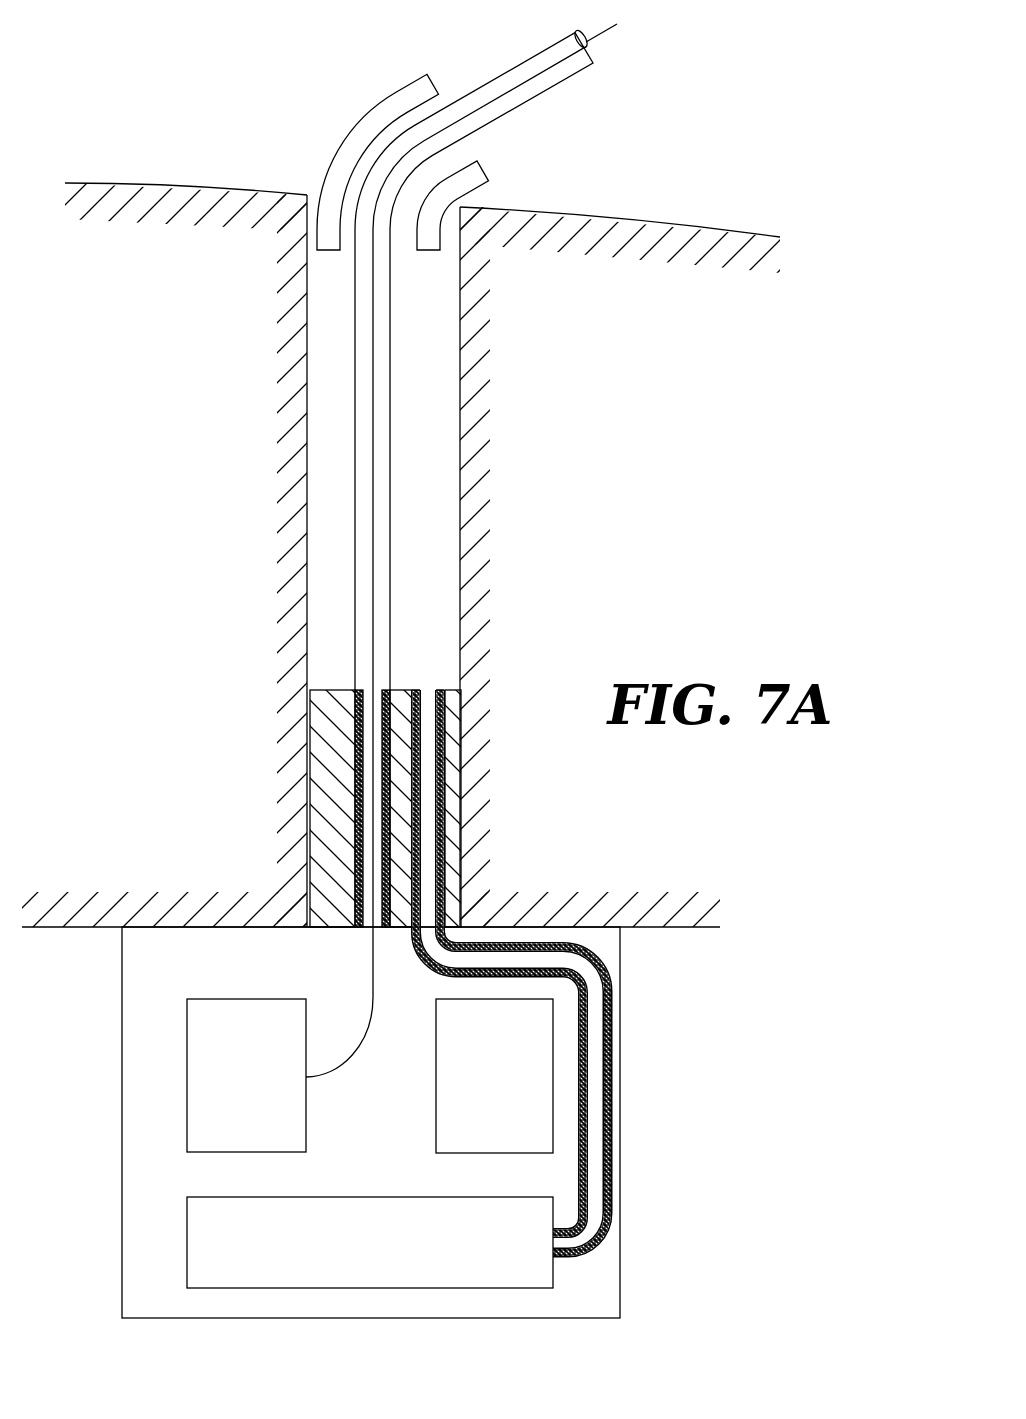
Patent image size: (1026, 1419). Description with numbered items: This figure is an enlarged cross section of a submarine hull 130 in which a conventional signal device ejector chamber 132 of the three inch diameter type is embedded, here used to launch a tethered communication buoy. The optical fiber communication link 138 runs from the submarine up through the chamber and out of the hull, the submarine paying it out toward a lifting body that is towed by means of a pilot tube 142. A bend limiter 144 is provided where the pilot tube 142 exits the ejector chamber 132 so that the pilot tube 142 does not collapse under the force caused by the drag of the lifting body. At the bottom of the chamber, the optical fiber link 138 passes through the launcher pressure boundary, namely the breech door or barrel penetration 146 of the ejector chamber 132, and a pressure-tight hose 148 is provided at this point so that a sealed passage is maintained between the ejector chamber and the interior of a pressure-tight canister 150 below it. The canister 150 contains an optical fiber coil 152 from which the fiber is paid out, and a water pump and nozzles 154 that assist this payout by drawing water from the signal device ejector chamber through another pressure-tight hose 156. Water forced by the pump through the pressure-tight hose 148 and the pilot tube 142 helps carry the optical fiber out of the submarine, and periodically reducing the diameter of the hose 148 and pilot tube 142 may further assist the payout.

The submarine hull 130 is at (139, 331).
The ejector chamber 132 is at (403, 394).
The optical fiber communication link 138 is at (510, 90).
The pilot tube 142 is at (502, 74).
The bend limiter 144 is at (363, 124).
The breech door or barrel penetration 146 is at (313, 822).
The pressure-tight hose 148 is at (355, 730).
The pressure-tight canister 150 is at (405, 1318).
The optical fiber coil 152 is at (187, 1072).
The water pump and nozzles 154 is at (187, 1262).
The pressure-tight hose 156 is at (500, 941).